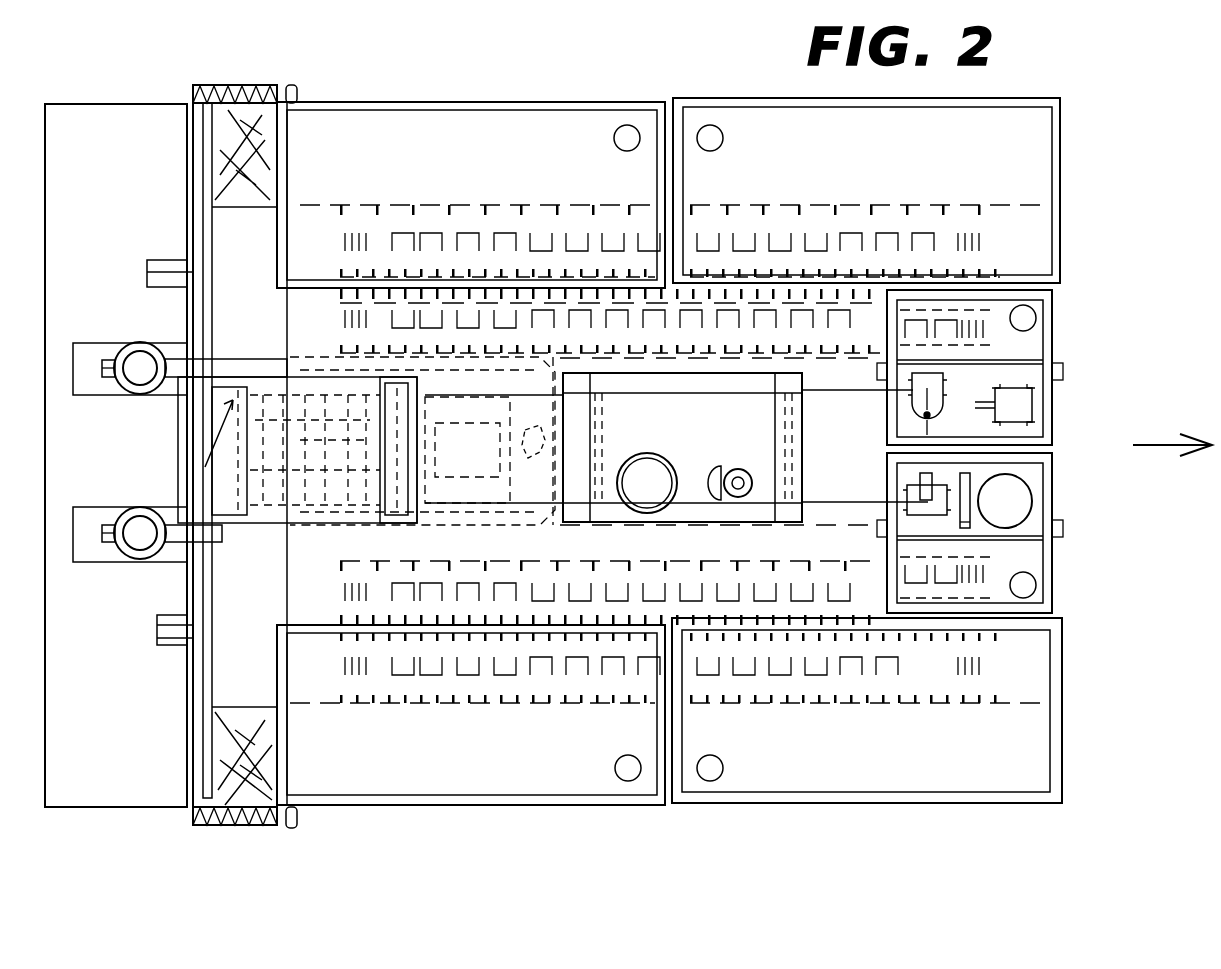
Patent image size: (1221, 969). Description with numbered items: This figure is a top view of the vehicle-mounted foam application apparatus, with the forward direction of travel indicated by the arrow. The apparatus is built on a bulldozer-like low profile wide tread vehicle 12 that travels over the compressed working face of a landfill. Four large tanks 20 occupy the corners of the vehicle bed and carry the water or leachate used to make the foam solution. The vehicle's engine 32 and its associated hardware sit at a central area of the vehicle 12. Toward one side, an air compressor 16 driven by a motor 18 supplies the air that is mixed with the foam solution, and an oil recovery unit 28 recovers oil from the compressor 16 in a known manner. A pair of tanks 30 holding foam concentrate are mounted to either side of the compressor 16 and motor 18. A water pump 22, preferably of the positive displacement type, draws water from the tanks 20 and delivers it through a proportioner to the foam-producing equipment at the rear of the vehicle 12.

The vehicle 12 is at (853, 826).
The air compressor 16 is at (923, 395).
The motor 18 is at (922, 493).
The tanks 20 is at (560, 150).
The water pump 22 is at (1023, 407).
The oil recovery unit 28 is at (1013, 500).
The tanks 30 is at (1023, 345).
The engine 32 is at (747, 410).